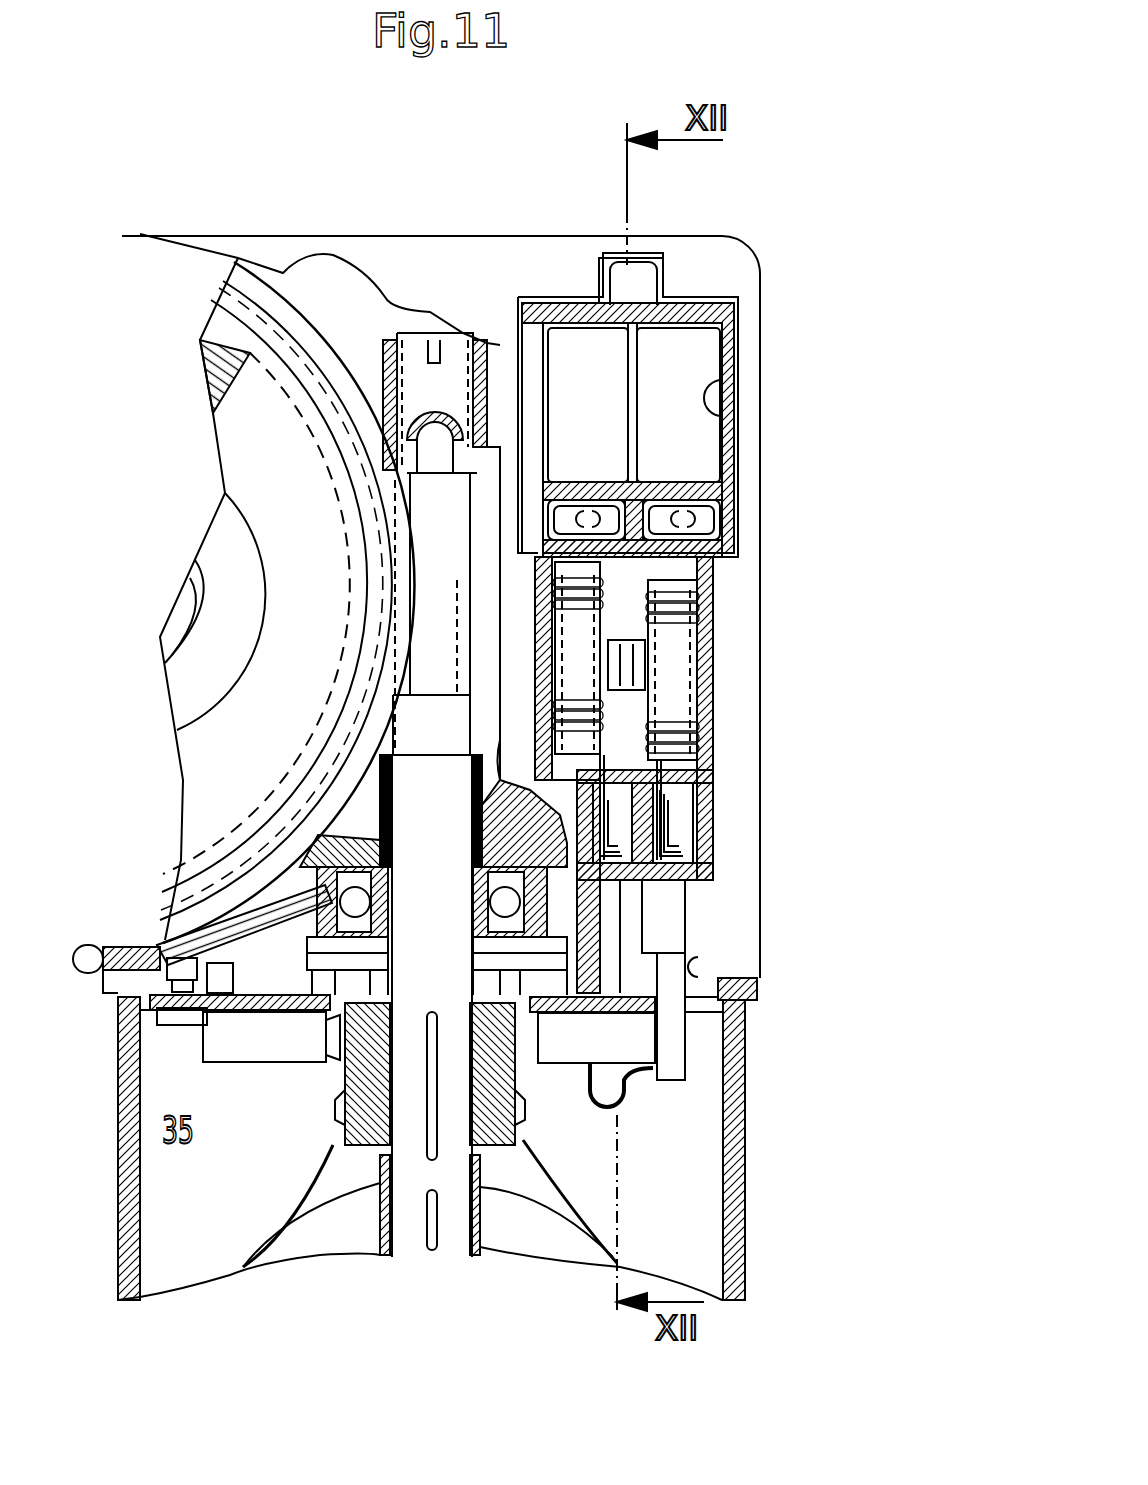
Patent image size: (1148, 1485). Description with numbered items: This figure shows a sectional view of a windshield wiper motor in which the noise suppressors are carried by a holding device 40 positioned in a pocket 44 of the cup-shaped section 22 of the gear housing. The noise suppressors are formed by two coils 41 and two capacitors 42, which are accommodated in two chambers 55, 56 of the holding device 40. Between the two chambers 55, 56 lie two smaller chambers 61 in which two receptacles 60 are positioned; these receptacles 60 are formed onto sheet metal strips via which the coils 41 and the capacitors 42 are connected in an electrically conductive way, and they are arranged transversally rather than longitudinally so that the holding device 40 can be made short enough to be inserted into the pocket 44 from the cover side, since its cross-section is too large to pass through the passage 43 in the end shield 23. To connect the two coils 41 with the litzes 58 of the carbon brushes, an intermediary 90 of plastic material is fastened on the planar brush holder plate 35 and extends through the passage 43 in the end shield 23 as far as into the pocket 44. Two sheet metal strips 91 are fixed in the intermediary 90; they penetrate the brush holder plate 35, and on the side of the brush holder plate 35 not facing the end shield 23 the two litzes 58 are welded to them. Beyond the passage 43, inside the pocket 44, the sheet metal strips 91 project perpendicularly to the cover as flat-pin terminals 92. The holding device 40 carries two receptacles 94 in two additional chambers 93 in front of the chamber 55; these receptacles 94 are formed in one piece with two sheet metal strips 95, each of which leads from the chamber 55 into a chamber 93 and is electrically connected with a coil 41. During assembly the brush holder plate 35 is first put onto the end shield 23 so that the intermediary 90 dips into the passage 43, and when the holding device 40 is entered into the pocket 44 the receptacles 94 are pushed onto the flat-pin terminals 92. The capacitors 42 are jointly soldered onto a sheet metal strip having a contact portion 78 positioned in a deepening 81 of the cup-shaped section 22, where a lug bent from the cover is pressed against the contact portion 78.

The cup-shaped section 22 is at (730, 263).
The end shield 23 is at (127, 943).
The brush holder plate 35 is at (130, 1135).
The holding device 40 is at (729, 438).
The coils 41 is at (715, 634).
The capacitors 42 is at (580, 345).
The passage 43 is at (737, 963).
The pocket 44 is at (713, 681).
The chamber 55 is at (718, 574).
The chamber 56 is at (720, 378).
The litzes 58 is at (615, 1100).
The receptacles 60 is at (700, 497).
The smaller chambers 61 is at (700, 534).
The contact portion 78 is at (643, 277).
The deepening 81 is at (623, 270).
The intermediary 90 is at (650, 908).
The sheet metal strips 91 is at (660, 931).
The flat-pin terminals 92 is at (713, 830).
The additional chambers 93 is at (713, 805).
The receptacles 94 is at (713, 870).
The sheet metal strips 95 is at (713, 772).